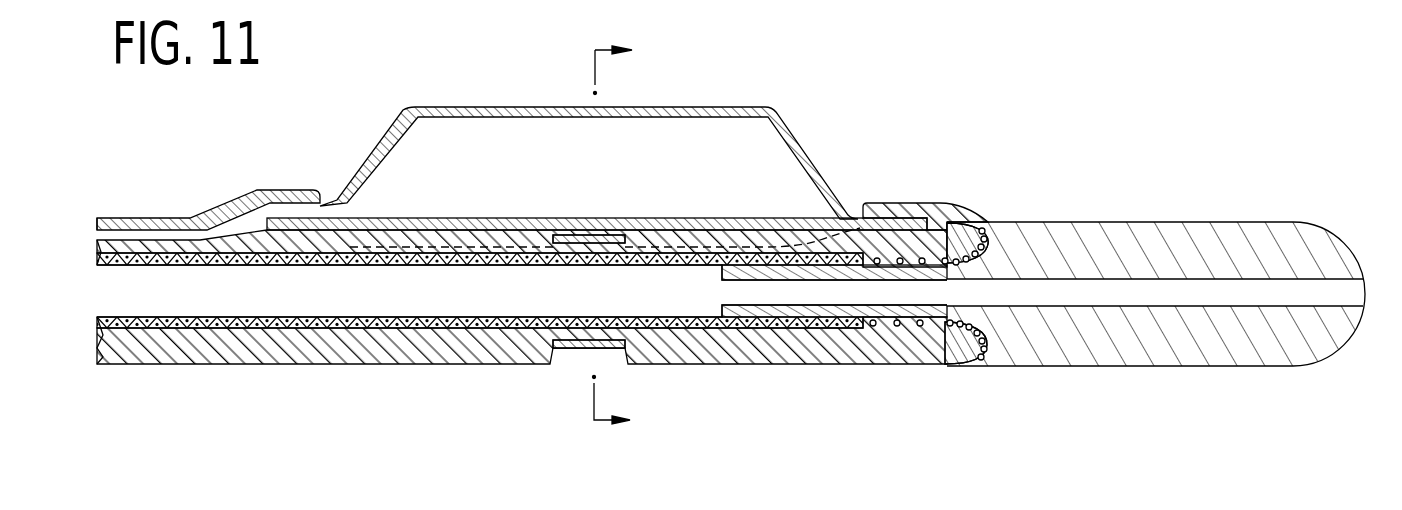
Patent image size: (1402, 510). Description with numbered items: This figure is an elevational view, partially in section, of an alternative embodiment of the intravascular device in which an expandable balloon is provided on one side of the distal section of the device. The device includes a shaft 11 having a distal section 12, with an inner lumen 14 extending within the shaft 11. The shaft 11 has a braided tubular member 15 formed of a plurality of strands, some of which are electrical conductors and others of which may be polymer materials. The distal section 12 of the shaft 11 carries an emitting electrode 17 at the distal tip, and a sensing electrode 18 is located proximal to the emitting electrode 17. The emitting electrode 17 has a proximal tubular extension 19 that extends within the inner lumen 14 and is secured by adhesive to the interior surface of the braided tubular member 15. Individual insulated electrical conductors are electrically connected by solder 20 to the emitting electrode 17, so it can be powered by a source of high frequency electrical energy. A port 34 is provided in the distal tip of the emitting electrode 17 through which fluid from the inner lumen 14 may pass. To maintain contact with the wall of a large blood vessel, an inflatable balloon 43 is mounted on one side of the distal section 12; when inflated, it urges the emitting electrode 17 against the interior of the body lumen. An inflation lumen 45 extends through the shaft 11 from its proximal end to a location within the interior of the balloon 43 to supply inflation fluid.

The shaft 11 is at (478, 365).
The distal section 12 is at (629, 238).
The inner lumen 14 is at (178, 312).
The braided tubular member 15 is at (400, 328).
The emitting electrode 17 is at (1227, 345).
The sensing electrode 18 is at (580, 349).
The proximal tubular extension 19 is at (910, 318).
The solder 20 is at (988, 222).
The port 34 is at (1358, 295).
The inflatable balloon 43 is at (496, 104).
The inflation lumen 45 is at (258, 215).